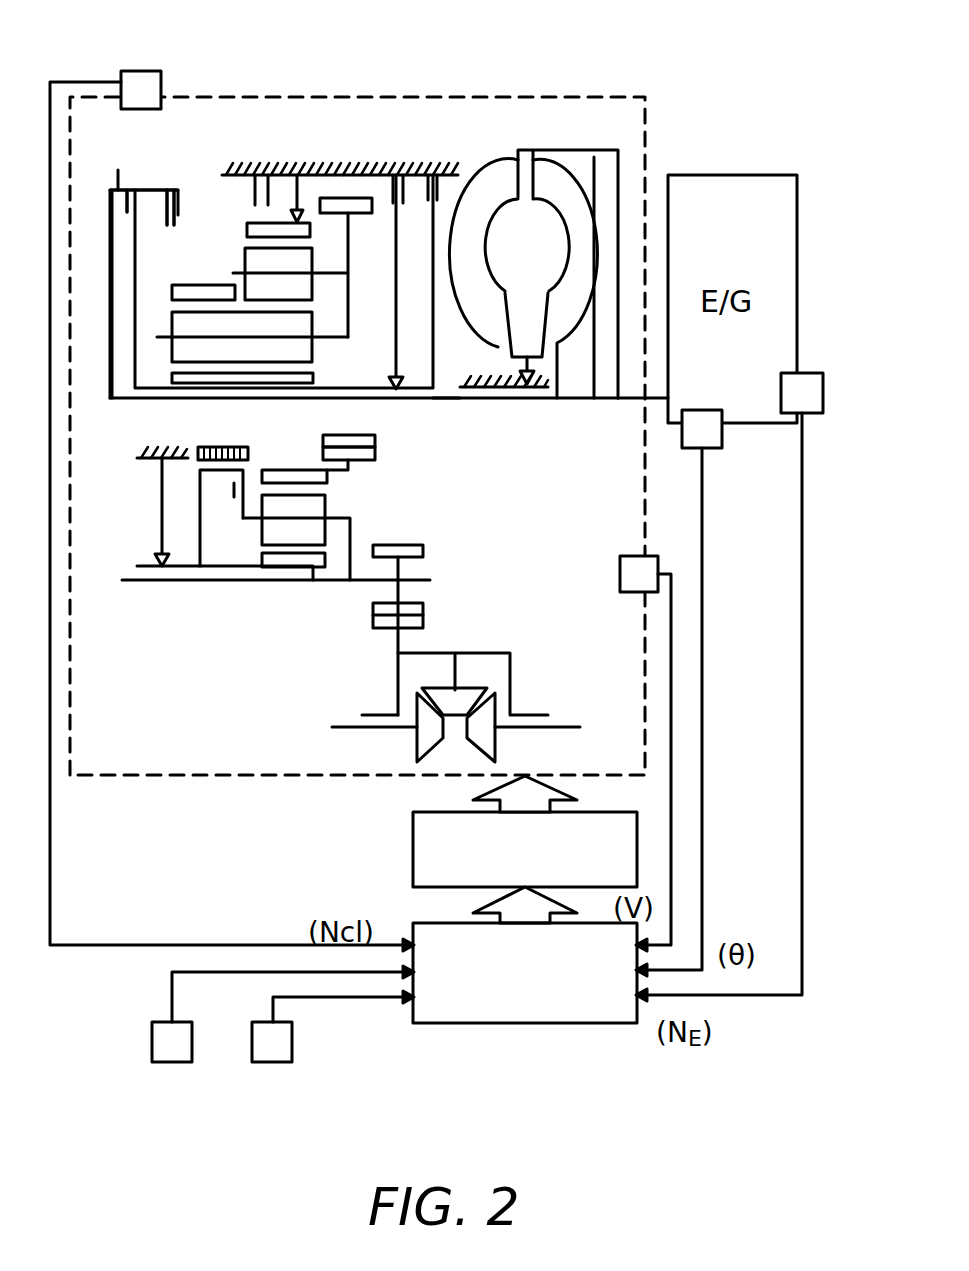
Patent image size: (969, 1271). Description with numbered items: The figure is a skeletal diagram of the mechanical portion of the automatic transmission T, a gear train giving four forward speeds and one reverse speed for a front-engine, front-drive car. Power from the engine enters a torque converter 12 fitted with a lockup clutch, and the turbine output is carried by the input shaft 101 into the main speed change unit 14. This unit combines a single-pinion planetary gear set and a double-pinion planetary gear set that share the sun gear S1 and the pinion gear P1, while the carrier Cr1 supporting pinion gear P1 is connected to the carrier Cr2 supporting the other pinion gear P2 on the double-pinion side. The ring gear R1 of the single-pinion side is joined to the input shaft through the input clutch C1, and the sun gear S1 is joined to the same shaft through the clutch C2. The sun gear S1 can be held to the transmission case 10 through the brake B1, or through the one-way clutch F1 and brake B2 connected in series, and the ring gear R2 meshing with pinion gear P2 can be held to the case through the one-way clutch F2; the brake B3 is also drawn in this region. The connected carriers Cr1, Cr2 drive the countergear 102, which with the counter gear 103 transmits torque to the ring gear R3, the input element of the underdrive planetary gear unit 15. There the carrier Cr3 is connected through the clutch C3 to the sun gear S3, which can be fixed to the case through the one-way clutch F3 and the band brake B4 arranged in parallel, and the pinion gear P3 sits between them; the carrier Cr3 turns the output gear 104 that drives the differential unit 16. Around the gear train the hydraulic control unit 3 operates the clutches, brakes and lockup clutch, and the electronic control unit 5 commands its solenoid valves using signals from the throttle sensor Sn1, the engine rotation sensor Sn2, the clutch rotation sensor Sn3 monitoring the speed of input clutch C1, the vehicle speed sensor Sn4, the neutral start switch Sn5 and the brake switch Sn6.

The automatic transmission T is at (384, 92).
The main speed change unit 14 is at (235, 125).
The planetary gear unit of the underdrive type 15 is at (242, 598).
The differential unit 16 is at (512, 652).
The transmission case 10 is at (343, 163).
The torque converter 12 is at (497, 168).
The hydraulic control unit 3 is at (413, 834).
The electronic control unit 5 is at (543, 1023).
The input shaft 101 is at (448, 400).
The countergear 102 is at (325, 416).
The counter gear 103 is at (375, 453).
The output gear 104 is at (413, 546).
The throttle sensor Sn1 is at (706, 450).
The engine rotation sensor Sn2 is at (808, 414).
The clutch rotation sensor Sn3 is at (150, 71).
The vehicle speed sensor Sn4 is at (620, 568).
The neutral start switch Sn5 is at (152, 1038).
The brake switch Sn6 is at (292, 1042).
The input clutch C1 is at (180, 192).
The clutch C2 is at (116, 188).
The clutch C3 is at (232, 486).
The brake B1 is at (434, 170).
The brake B2 is at (390, 170).
The third brake B3 is at (256, 163).
The band brake B4 is at (242, 447).
The one-way clutch F1 is at (392, 380).
The one-way clutch F2 is at (298, 176).
The one-way clutch F3 is at (150, 560).
The ring gear R1 is at (192, 285).
The ring gear R2 is at (247, 229).
The ring gear R3 is at (272, 470).
The pinion gear P1 is at (313, 332).
The pinion gear P2 is at (313, 262).
The third pinion P3 is at (293, 520).
The carrier Cr1 is at (332, 338).
The carrier Cr2 is at (328, 278).
The carrier Cr3 is at (350, 518).
The sun gear S1 is at (192, 383).
The sun gear S3 is at (312, 584).